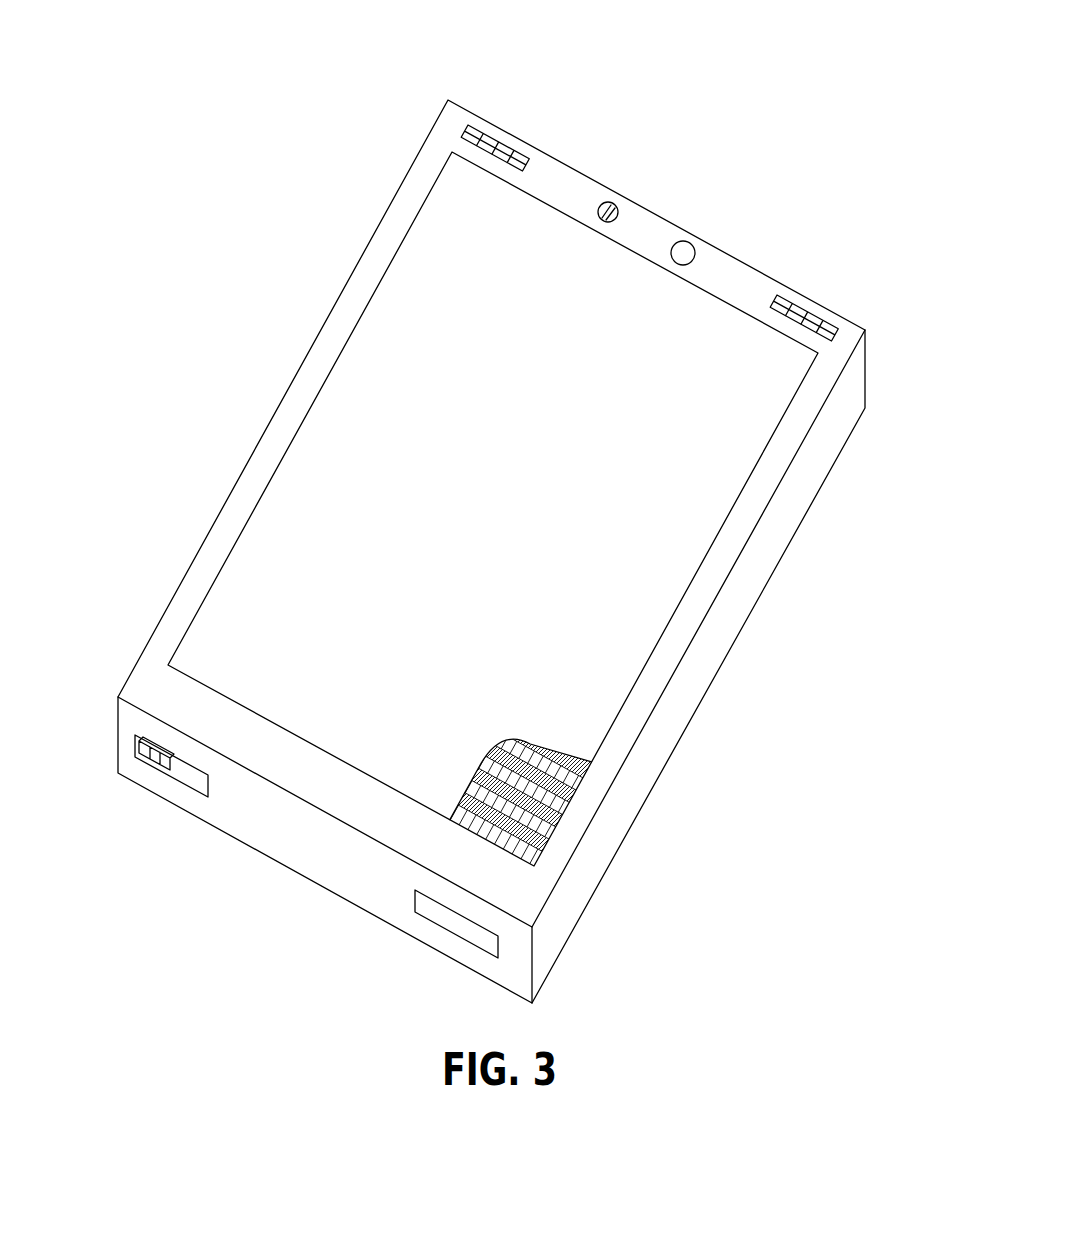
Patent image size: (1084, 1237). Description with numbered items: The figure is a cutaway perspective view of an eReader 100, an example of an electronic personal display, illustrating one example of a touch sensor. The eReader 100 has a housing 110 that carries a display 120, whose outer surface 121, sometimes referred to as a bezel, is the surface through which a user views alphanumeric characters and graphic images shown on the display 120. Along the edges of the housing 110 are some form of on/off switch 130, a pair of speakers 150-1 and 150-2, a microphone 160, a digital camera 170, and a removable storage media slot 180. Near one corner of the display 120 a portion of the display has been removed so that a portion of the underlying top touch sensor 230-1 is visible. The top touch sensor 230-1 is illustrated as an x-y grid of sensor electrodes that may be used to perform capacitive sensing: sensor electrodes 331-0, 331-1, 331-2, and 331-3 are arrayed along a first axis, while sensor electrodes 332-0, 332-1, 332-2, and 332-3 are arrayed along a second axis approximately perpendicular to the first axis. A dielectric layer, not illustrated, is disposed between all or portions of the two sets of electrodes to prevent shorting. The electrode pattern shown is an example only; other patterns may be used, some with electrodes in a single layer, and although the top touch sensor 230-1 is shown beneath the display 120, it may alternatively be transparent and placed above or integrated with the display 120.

The eReader 100 is at (207, 303).
The housing 110 is at (867, 382).
The display 120 is at (447, 145).
The outer surface 121 is at (673, 581).
The on/off switch 130 is at (138, 755).
The speaker 150-1 is at (482, 136).
The speaker 150-2 is at (798, 312).
The microphone 160 is at (609, 203).
The digital camera 170 is at (686, 242).
The removable storage media slot 180 is at (443, 918).
The top touch sensor 230-1 is at (568, 741).
The sensor electrode 331-0 is at (512, 860).
The sensor electrode 331-1 is at (497, 843).
The sensor electrode 331-2 is at (472, 827).
The sensor electrode 331-3 is at (452, 815).
The sensor electrode 332-0 is at (545, 846).
The sensor electrode 332-1 is at (558, 822).
The sensor electrode 332-2 is at (572, 798).
The sensor electrode 332-3 is at (586, 774).